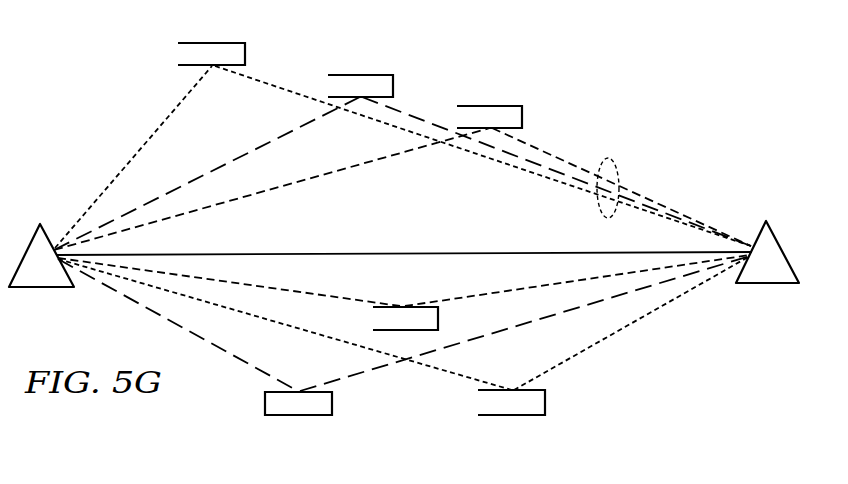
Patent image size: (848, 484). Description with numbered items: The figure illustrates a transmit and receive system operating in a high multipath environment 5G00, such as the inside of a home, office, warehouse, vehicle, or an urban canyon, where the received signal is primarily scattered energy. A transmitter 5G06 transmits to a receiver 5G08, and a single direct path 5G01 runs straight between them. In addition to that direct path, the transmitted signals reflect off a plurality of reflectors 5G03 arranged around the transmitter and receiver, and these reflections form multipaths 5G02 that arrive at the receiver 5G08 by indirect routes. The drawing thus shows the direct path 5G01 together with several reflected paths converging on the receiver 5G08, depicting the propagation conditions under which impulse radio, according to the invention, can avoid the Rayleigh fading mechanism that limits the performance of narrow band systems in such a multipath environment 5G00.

The high multipath environment 5G00 is at (93, 91).
The direct path 5G01 is at (404, 267).
The multipaths 5G02 is at (611, 161).
The reflectors 5G03 is at (346, 216).
The transmitter 5G06 is at (41, 269).
The receiver 5G08 is at (767, 266).